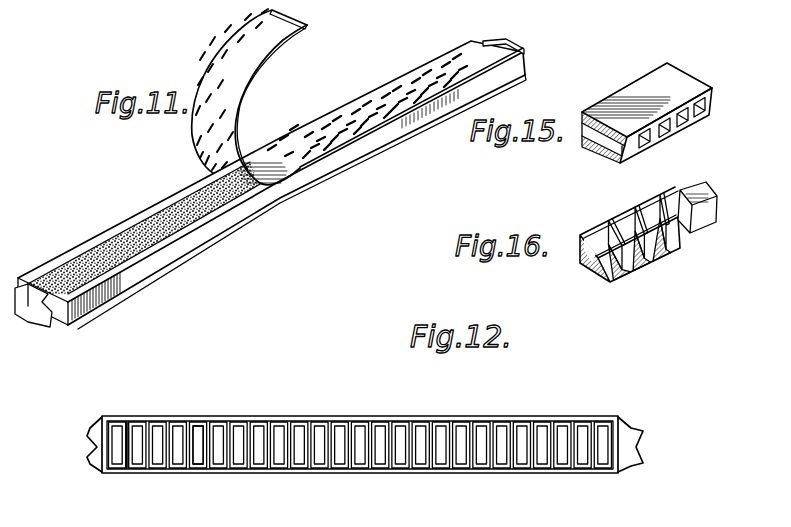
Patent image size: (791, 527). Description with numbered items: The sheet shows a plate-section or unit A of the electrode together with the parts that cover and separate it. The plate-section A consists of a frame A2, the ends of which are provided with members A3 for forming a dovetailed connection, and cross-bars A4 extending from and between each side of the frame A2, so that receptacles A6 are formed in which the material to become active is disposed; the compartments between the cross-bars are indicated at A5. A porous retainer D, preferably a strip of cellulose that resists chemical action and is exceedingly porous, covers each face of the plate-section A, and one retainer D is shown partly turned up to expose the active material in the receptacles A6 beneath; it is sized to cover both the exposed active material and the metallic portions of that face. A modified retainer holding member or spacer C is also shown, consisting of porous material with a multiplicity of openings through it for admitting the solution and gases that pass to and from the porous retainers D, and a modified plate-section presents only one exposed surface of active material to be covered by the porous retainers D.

In FIG. 11, the plate-section or unit A is at (272, 185).
In FIG. 12, the plate-section or unit A is at (360, 425).
In FIG. 16, the plate-section or unit A is at (630, 221).
In FIG. 11, the frame A2 is at (163, 286).
In FIG. 12, the frame A2 is at (279, 417).
In FIG. 16, the frame A2 is at (690, 267).
In FIG. 11, the members for forming a dovetailed connection A3 is at (550, 46).
In FIG. 12, the members for forming a dovetailed connection A3 is at (90, 432).
In FIG. 16, the members for forming a dovetailed connection A3 is at (698, 188).
In FIG. 12, the cross-bars A4 is at (128, 438).
In FIG. 16, the cross-bars A4 is at (620, 280).
In FIG. 12, the cell compartment A5 is at (197, 432).
In FIG. 16, the cell compartment A5 is at (640, 268).
In FIG. 11, the receptacles A6 is at (77, 254).
In FIG. 15, the grooved retainer holding member or spacer C is at (647, 106).
In FIG. 11, the porous retainer D is at (290, 34).